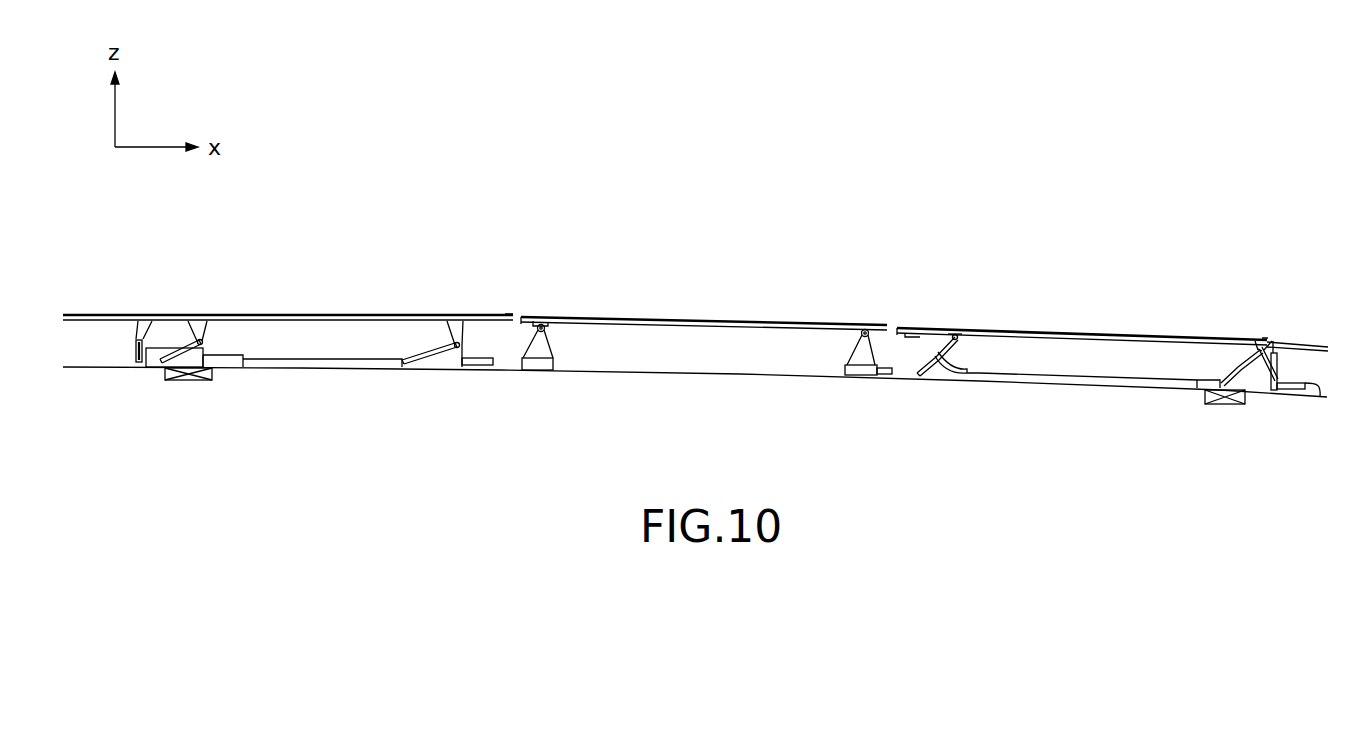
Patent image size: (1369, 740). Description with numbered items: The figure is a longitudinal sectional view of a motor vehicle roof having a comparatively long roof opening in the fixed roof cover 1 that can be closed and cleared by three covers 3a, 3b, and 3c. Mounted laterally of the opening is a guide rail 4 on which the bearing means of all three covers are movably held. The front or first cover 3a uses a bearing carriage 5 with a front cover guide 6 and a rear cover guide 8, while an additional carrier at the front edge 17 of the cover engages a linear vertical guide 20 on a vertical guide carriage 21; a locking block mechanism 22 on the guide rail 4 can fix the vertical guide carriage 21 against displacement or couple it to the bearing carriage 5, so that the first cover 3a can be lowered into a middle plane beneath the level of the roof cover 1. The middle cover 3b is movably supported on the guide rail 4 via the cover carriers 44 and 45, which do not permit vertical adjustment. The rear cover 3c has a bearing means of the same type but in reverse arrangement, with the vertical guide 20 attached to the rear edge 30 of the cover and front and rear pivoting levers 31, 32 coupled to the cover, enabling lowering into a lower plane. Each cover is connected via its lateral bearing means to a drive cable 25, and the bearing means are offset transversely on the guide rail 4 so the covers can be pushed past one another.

The fixed roof cover 1 is at (96, 313).
The first cover 3a is at (328, 315).
The second cover 3b is at (728, 318).
The third cover 3c is at (1088, 330).
The guide rail 4 is at (1060, 384).
The bearing carriage 5 is at (336, 363).
The front cover guide 6 is at (160, 376).
The rear cover guide 8 is at (443, 362).
The front edge of the cover 17 is at (150, 315).
The linear vertical guide 20 is at (1280, 372).
The vertical guide carriage 21 is at (132, 352).
The locking block mechanism 22 is at (187, 381).
The drive cable 25 is at (479, 366).
The rear edge of the cover 30 is at (505, 313).
The front pivoting lever 31 is at (1237, 340).
The rear pivoting lever 32 is at (938, 335).
The cover carrier 44 is at (537, 352).
The cover carrier 45 is at (853, 376).